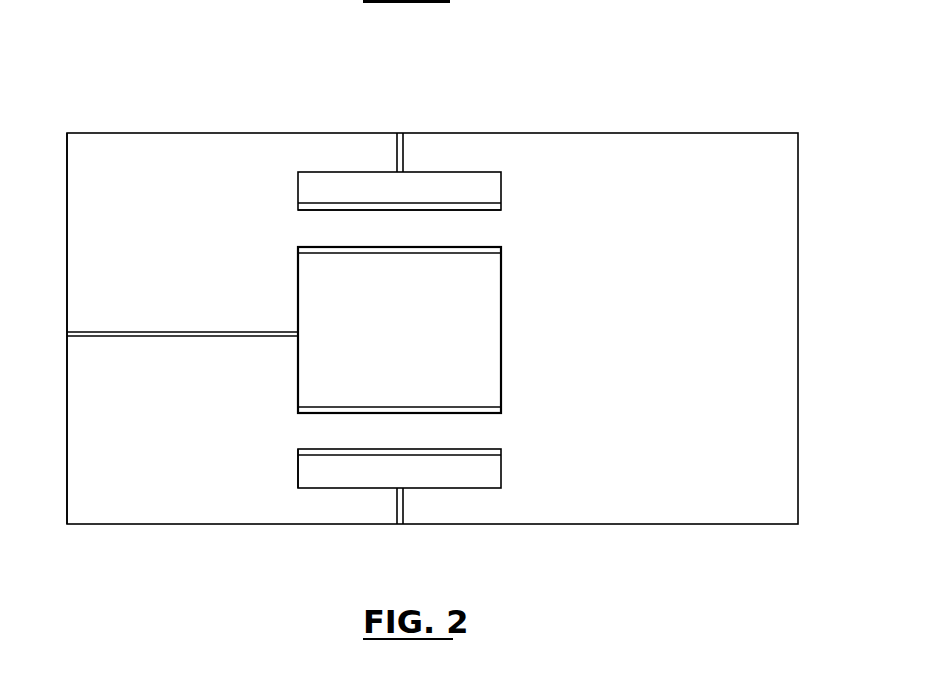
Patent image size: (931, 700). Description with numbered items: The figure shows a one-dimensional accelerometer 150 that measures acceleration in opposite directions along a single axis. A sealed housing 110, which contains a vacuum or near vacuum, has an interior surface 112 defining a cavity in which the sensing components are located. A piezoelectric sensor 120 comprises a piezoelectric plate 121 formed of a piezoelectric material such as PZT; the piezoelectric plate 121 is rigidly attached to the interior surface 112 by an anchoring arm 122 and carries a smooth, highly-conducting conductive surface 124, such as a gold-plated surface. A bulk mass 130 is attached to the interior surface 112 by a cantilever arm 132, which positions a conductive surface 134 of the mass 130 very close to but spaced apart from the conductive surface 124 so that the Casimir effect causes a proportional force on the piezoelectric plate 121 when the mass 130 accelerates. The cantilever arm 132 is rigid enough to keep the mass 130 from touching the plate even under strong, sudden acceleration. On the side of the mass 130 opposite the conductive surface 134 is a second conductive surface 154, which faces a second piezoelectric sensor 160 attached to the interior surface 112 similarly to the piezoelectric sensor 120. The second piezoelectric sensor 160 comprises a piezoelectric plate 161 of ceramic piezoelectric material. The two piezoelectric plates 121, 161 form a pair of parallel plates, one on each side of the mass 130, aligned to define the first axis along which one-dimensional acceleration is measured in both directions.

The sealed housing 110 is at (798, 194).
The interior surface 112 is at (67, 157).
The piezoelectric sensor 120 is at (512, 477).
The piezoelectric plate 121 is at (308, 470).
The anchoring arm 122 is at (397, 153).
The conductive surface 124 is at (480, 449).
The mass 130 is at (485, 310).
The cantilever arm 132 is at (215, 337).
The conductive surface 134 is at (478, 413).
The one-dimensional accelerometer 150 is at (718, 46).
The second conductive surface 154 is at (333, 247).
The second piezoelectric sensor 160 is at (512, 181).
The piezoelectric plate 161 is at (483, 210).